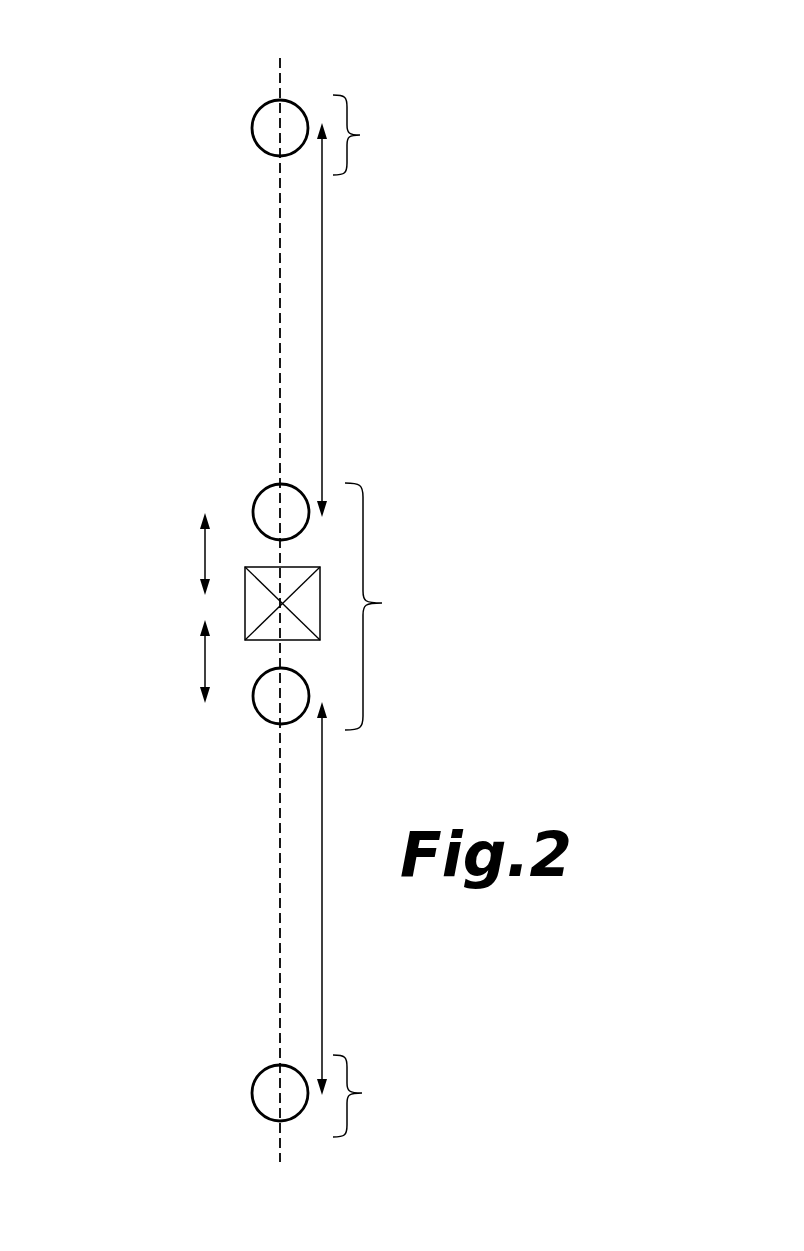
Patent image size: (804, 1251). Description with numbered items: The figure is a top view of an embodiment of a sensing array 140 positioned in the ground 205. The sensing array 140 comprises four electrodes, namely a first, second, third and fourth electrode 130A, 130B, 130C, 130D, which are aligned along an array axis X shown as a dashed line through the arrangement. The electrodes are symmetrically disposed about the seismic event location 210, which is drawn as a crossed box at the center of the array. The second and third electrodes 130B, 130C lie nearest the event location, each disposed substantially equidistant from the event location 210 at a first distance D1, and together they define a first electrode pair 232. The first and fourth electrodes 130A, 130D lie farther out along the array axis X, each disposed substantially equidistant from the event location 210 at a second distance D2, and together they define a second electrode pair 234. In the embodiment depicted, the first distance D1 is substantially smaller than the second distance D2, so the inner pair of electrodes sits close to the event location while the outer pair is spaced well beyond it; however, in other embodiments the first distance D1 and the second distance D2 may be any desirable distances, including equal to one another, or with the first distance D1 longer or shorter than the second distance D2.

The sensing array 140 is at (325, 582).
The ground 205 is at (267, 583).
The first electrode 130A is at (252, 128).
The second electrode 130B is at (253, 512).
The third electrode 130C is at (253, 693).
The fourth electrode 130D is at (252, 1090).
The seismic event location 210 is at (244, 602).
The first electrode pair 232 is at (385, 606).
The second electrode pair 234 is at (368, 616).
The array axis X is at (280, 876).
The first distance D1 is at (193, 608).
The second distance D2 is at (311, 609).